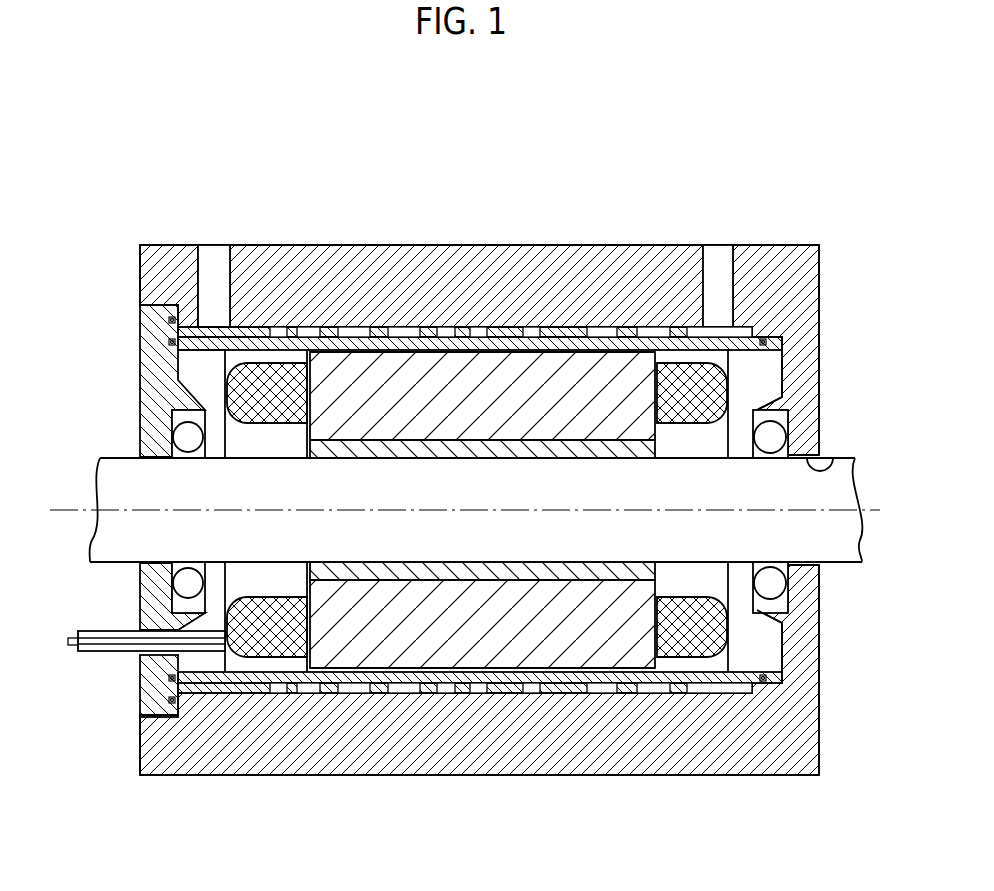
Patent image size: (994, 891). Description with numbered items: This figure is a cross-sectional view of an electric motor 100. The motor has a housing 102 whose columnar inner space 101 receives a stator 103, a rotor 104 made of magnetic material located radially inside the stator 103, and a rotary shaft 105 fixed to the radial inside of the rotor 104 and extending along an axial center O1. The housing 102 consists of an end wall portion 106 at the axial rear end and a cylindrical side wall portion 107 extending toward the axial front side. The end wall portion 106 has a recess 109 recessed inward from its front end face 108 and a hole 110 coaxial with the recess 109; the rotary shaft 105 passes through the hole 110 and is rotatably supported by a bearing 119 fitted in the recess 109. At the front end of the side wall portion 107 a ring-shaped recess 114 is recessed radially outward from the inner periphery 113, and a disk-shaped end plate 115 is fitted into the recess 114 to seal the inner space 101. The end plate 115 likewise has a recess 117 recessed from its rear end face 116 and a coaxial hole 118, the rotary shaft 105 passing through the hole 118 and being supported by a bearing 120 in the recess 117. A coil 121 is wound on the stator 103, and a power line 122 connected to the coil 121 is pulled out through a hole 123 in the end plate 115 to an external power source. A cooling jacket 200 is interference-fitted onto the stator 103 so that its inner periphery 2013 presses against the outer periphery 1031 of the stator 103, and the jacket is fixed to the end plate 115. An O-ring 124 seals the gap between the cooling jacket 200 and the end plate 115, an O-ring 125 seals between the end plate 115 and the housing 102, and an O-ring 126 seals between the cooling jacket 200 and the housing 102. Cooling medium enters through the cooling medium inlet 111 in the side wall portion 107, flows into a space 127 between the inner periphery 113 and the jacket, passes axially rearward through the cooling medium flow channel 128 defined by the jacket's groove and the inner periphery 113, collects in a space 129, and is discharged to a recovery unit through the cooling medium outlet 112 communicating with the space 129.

The electric motor 100 is at (668, 150).
The inner space 101 is at (734, 384).
The housing 102 is at (821, 272).
The stator 103 is at (355, 360).
The outer periphery 1031 is at (398, 352).
The rotor 104 is at (546, 575).
The rotary shaft 105 is at (118, 472).
The end wall portion 106 is at (800, 645).
The side wall portion 107 is at (578, 278).
The end face 108 is at (780, 662).
The recess 109 is at (786, 400).
The hole 110 is at (833, 458).
The cooling medium inlet 111 is at (213, 300).
The cooling medium outlet 112 is at (735, 262).
The inner periphery 113 is at (737, 694).
The ring-shaped recess 114 is at (147, 722).
The end plate 115 is at (152, 322).
The end face 116 is at (195, 372).
The recess 117 is at (200, 410).
The hole 118 is at (148, 570).
The bearing 119 is at (786, 598).
The bearing 120 is at (165, 598).
The coil 121 is at (275, 377).
The power line 122 is at (80, 631).
The hole 123 is at (140, 650).
The O-ring 124 is at (168, 343).
The O-ring 125 is at (153, 292).
The O-ring 126 is at (767, 341).
The space 127 is at (193, 300).
The cooling medium flow channel 128 is at (455, 340).
The space 129 is at (716, 330).
The cooling jacket 200 is at (213, 696).
The inner periphery 2013 is at (242, 345).
The axial center O1 is at (85, 508).